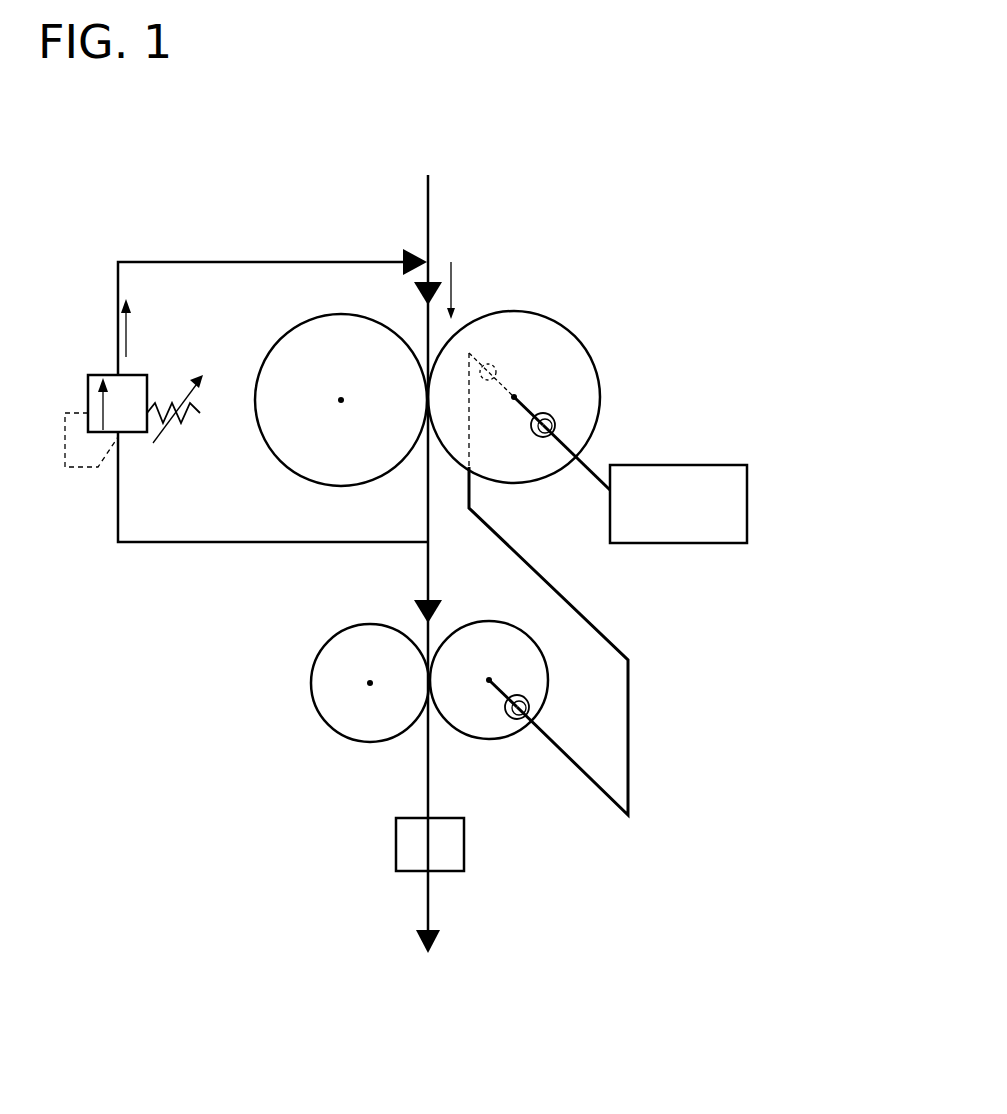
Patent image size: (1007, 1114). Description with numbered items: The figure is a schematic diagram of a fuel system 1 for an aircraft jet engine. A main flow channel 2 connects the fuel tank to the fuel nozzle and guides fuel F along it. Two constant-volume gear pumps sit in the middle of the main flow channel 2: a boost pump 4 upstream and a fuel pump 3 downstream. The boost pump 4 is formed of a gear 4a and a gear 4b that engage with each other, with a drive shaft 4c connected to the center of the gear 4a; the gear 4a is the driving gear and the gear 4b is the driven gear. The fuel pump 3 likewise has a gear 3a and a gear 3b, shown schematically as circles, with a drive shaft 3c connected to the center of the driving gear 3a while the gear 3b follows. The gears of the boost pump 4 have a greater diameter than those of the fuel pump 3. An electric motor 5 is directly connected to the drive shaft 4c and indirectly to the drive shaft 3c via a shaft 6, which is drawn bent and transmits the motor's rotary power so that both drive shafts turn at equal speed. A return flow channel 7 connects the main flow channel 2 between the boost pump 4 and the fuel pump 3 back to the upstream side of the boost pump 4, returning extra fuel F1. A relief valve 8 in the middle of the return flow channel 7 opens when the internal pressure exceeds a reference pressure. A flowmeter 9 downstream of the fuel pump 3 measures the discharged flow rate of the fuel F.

The fuel system 1 is at (721, 236).
The main flow channel 2 is at (428, 188).
The fuel pump 3 is at (301, 750).
The gear 3a is at (498, 738).
The gear 3b is at (312, 670).
The drive shaft 3c is at (500, 682).
The boost pump 4 is at (638, 359).
The gear 4a is at (548, 330).
The gear 4b is at (260, 373).
The drive shaft 4c is at (532, 399).
The electric motor 5 is at (748, 482).
The shaft 6 is at (555, 585).
The return flow channel 7 is at (157, 543).
The relief valve 8 is at (72, 372).
The flowmeter 9 is at (464, 838).
The fuel F is at (451, 273).
The extra fuel F1 is at (126, 318).